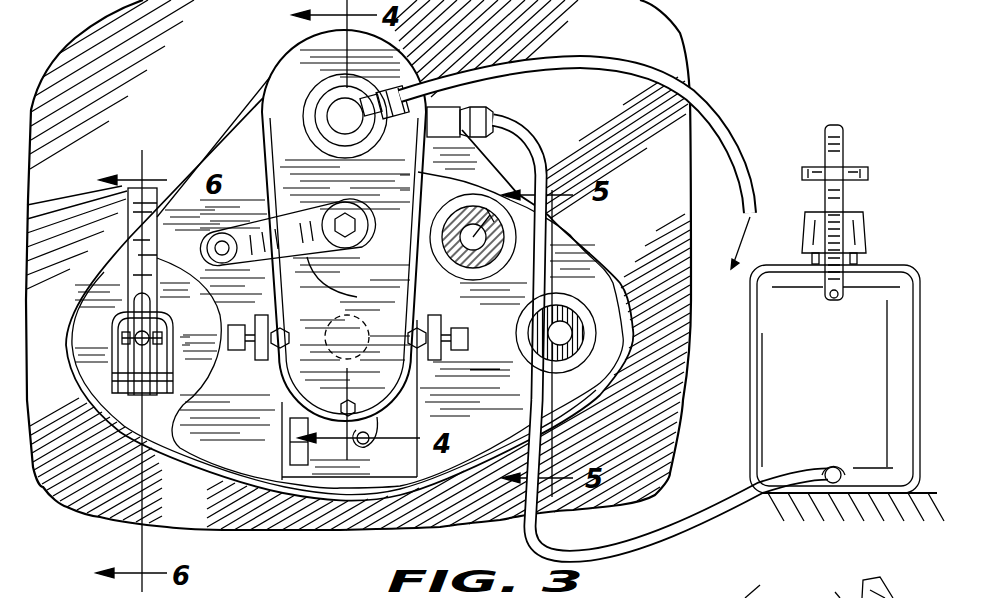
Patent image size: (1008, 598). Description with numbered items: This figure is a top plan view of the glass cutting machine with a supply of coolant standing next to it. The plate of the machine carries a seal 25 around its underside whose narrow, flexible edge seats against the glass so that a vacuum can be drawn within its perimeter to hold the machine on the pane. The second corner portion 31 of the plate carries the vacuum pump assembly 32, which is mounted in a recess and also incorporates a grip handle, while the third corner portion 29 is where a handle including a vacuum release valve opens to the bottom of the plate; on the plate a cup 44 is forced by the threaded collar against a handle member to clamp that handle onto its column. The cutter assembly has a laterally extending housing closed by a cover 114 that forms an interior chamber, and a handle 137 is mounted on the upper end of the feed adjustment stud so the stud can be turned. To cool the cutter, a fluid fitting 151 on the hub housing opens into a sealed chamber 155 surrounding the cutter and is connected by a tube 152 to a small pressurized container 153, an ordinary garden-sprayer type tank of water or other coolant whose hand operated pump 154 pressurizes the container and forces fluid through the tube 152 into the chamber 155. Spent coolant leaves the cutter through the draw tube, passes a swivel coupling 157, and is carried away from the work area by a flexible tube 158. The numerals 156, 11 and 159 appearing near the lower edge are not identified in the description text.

The cover 114 is at (286, 85).
The swivel coupling 157 is at (340, 112).
The fluid fitting 151 is at (450, 110).
The flexible tube 158 is at (703, 90).
The handle 137 is at (352, 308).
The cup 44 is at (567, 320).
The third corner portion 29 is at (617, 338).
The second corner portion 31 is at (105, 298).
The vacuum pump assembly 32 is at (109, 355).
The tube 152 is at (540, 523).
The pressurized container 153 is at (767, 432).
The hand operated pump 154 is at (843, 197).
The seal 25 is at (785, 597).
The sealed chamber 155 is at (738, 590).
The fitting 156 is at (826, 585).
The member 11 is at (882, 575).
The member 159 is at (904, 590).